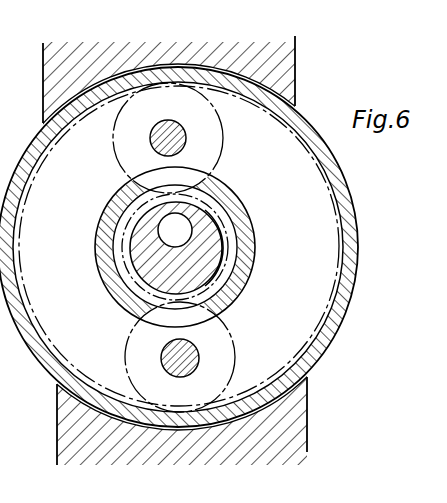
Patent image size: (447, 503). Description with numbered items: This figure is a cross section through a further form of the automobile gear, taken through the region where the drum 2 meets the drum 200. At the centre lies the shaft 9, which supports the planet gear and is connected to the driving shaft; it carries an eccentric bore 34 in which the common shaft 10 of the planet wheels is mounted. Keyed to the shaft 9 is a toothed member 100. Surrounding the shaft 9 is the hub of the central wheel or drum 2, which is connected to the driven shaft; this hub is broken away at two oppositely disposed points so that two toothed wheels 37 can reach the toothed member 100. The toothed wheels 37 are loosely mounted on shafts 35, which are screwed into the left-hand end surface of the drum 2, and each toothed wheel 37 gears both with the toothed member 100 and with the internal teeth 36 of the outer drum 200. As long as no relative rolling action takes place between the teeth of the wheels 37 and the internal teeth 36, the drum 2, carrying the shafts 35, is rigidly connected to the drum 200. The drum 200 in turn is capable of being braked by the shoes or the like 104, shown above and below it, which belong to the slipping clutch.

The brake shoes 104 is at (280, 60).
The drum 200 is at (346, 198).
The internal teeth 36 is at (18, 251).
The central wheel (drum) 2 is at (245, 279).
The toothed member 100 is at (217, 212).
The shaft 9 is at (207, 247).
The eccentric bore 34 is at (119, 264).
The common shaft 10 is at (172, 234).
The toothed wheels 37 is at (222, 118).
The shafts 35 is at (188, 146).